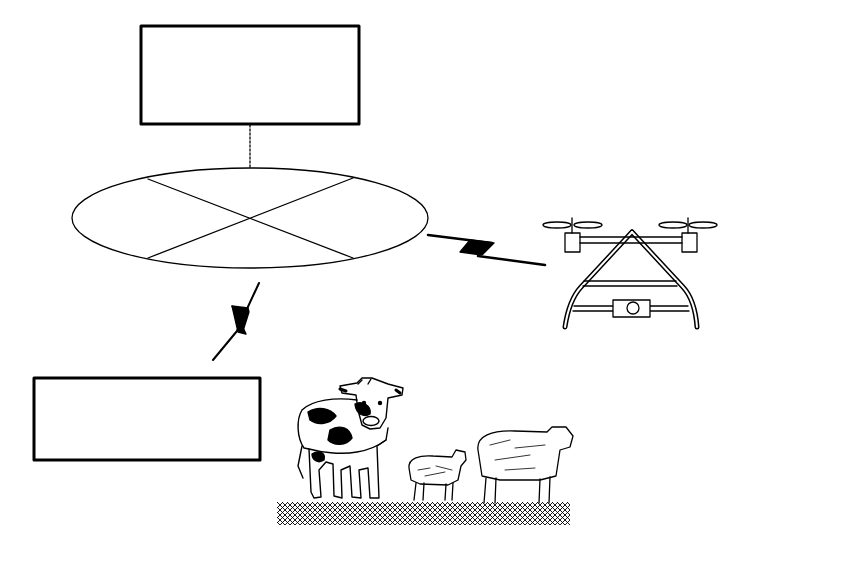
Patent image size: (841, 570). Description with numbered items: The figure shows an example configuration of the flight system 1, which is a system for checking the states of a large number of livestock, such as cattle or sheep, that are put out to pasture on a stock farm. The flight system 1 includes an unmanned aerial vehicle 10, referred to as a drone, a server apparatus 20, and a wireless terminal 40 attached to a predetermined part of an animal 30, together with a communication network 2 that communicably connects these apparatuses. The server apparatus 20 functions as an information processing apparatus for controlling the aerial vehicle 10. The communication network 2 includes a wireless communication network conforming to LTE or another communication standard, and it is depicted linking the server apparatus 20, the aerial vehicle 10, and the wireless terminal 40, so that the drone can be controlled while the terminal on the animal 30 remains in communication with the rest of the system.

The flight system 1 is at (458, 128).
The communication network 2 is at (378, 184).
The unmanned aerial vehicle 10 is at (659, 266).
The server apparatus 20 is at (140, 72).
The animal 30 is at (461, 396).
The wireless terminal 40 is at (98, 376).